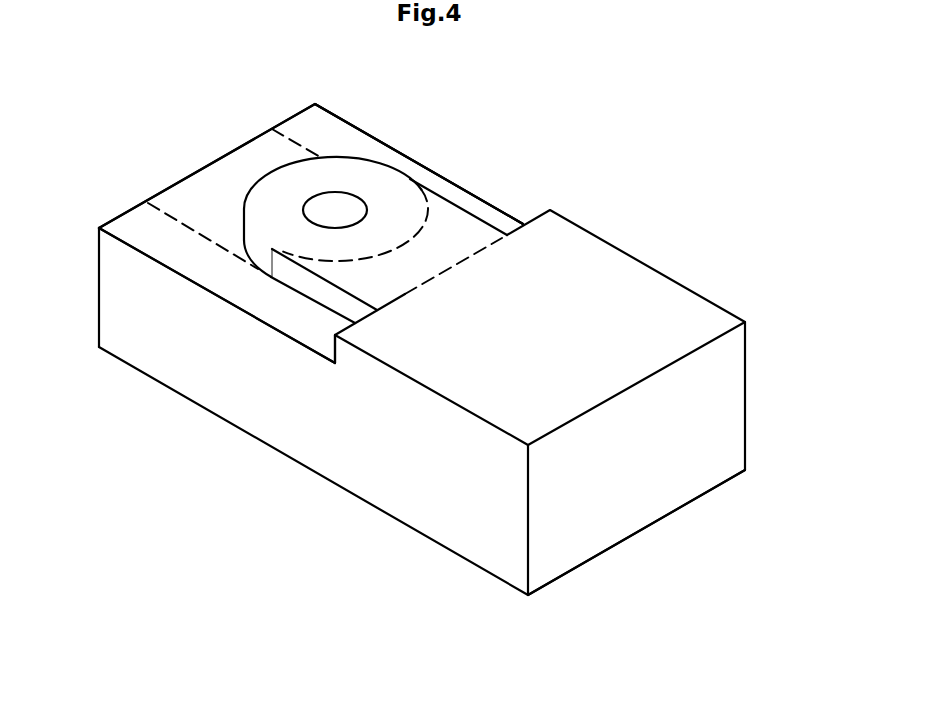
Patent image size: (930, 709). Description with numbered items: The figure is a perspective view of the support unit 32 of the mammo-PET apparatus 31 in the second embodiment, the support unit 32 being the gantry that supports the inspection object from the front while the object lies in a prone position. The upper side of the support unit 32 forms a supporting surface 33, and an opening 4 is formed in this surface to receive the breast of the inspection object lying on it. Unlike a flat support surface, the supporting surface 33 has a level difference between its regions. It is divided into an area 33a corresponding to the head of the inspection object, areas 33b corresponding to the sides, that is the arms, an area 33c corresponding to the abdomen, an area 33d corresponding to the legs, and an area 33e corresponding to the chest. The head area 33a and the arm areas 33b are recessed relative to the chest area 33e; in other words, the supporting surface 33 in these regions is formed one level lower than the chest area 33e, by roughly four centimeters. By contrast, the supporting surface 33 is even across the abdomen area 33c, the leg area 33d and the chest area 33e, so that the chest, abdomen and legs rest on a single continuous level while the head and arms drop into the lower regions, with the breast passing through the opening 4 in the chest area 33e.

The opening 4 is at (328, 220).
The mammo-PET apparatus 31 is at (703, 197).
The support unit 32 is at (568, 560).
The supporting surface 33 is at (228, 88).
The area corresponding to the head 33a is at (248, 153).
The areas corresponding to the arms 33b is at (345, 140).
The area corresponding to the abdomen 33c is at (455, 228).
The area corresponding to the legs 33d is at (558, 252).
The area corresponding to the chest 33e is at (400, 193).